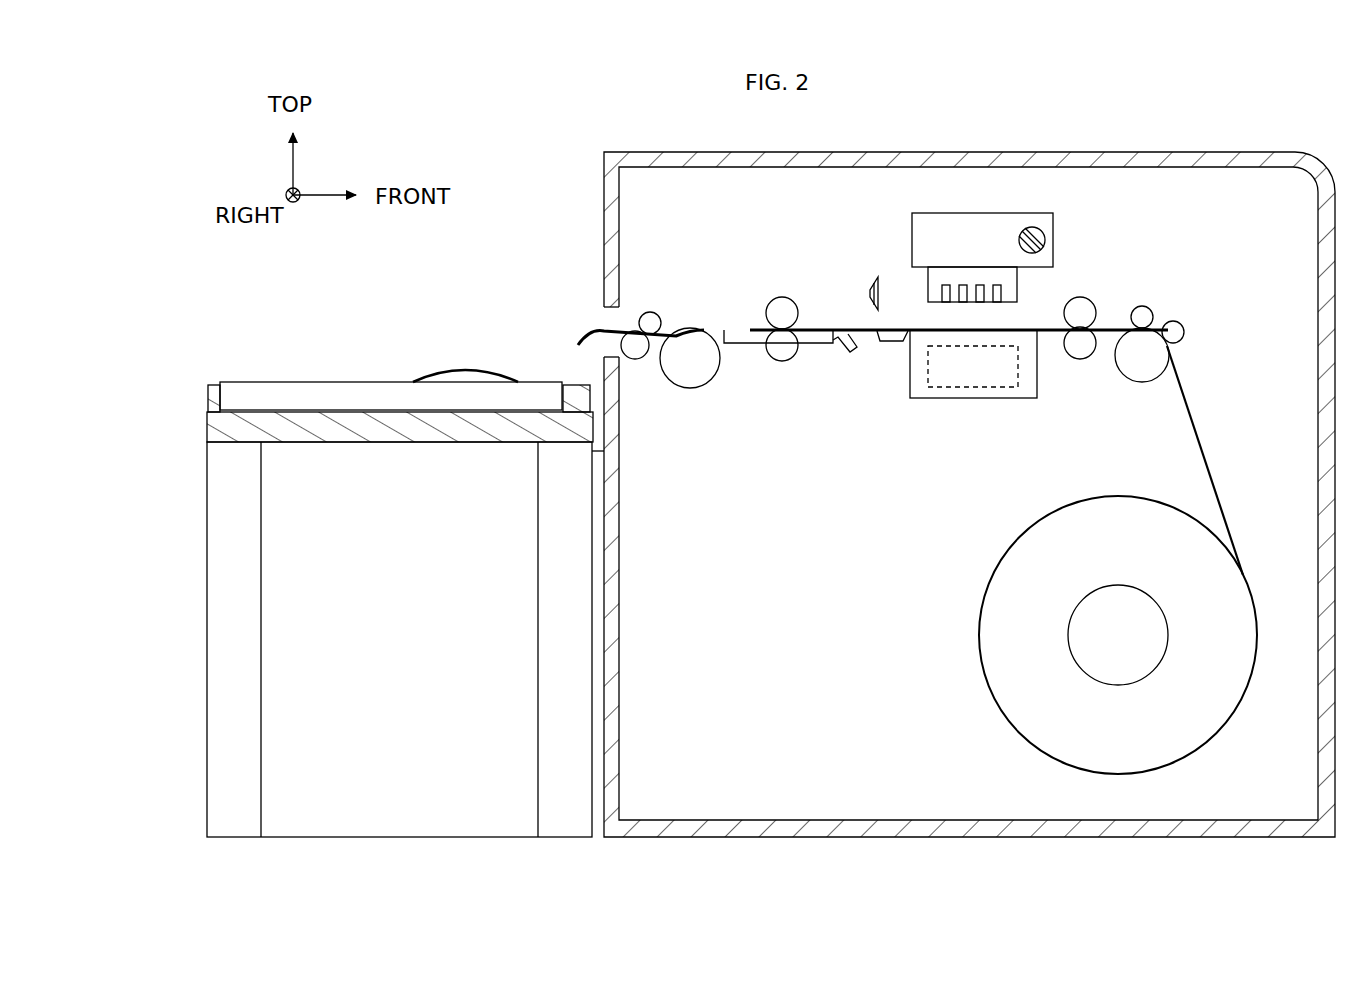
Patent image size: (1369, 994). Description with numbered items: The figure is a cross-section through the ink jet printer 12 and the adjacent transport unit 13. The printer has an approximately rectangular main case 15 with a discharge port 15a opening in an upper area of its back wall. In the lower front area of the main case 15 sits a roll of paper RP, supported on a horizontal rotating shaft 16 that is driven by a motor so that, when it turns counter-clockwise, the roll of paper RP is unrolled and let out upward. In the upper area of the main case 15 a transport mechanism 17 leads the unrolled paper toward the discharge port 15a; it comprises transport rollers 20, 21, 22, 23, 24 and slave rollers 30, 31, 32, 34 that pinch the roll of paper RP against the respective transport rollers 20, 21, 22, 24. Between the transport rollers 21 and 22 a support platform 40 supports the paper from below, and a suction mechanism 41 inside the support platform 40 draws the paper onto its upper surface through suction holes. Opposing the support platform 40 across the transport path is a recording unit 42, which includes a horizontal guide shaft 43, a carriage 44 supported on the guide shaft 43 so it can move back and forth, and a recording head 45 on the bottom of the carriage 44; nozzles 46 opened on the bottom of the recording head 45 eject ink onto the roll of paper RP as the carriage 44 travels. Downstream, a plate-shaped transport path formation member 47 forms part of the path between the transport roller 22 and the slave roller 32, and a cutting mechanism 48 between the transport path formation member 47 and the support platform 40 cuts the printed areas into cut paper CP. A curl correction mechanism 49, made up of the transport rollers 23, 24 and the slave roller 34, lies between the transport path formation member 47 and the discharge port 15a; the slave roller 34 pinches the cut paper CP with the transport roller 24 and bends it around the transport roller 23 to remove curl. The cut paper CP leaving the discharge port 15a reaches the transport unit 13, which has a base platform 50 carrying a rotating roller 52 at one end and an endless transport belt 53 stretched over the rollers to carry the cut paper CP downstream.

The ink jet printer 12 is at (926, 446).
The transport unit 13 is at (376, 559).
The main case 15 is at (1090, 152).
The discharge port 15a is at (604, 312).
The rotating shaft 16 is at (1095, 661).
The transport mechanism 17 is at (1149, 329).
The transport roller 20 is at (1143, 383).
The transport roller 21 is at (1080, 360).
The transport roller 22 is at (782, 361).
The transport roller 23 is at (690, 388).
The transport roller 24 is at (636, 359).
The slave roller 30 is at (1142, 306).
The slave roller 31 is at (1082, 298).
The slave roller 32 is at (778, 297).
The slave roller 34 is at (650, 312).
The support platform 40 is at (1005, 400).
The suction mechanism 41 is at (948, 390).
The recording unit 42 is at (1007, 255).
The guide shaft 43 is at (1046, 240).
The carriage 44 is at (990, 217).
The recording head 45 is at (928, 286).
The nozzles 46 is at (980, 292).
The transport path formation member 47 is at (832, 349).
The cutting mechanism 48 is at (880, 332).
The curl correction mechanism 49 is at (670, 313).
The base platform 50 is at (210, 572).
The rotating roller 52 is at (342, 400).
The endless transport belt 53 is at (418, 418).
The cut paper CP is at (676, 333).
The roll of paper RP is at (1206, 445).